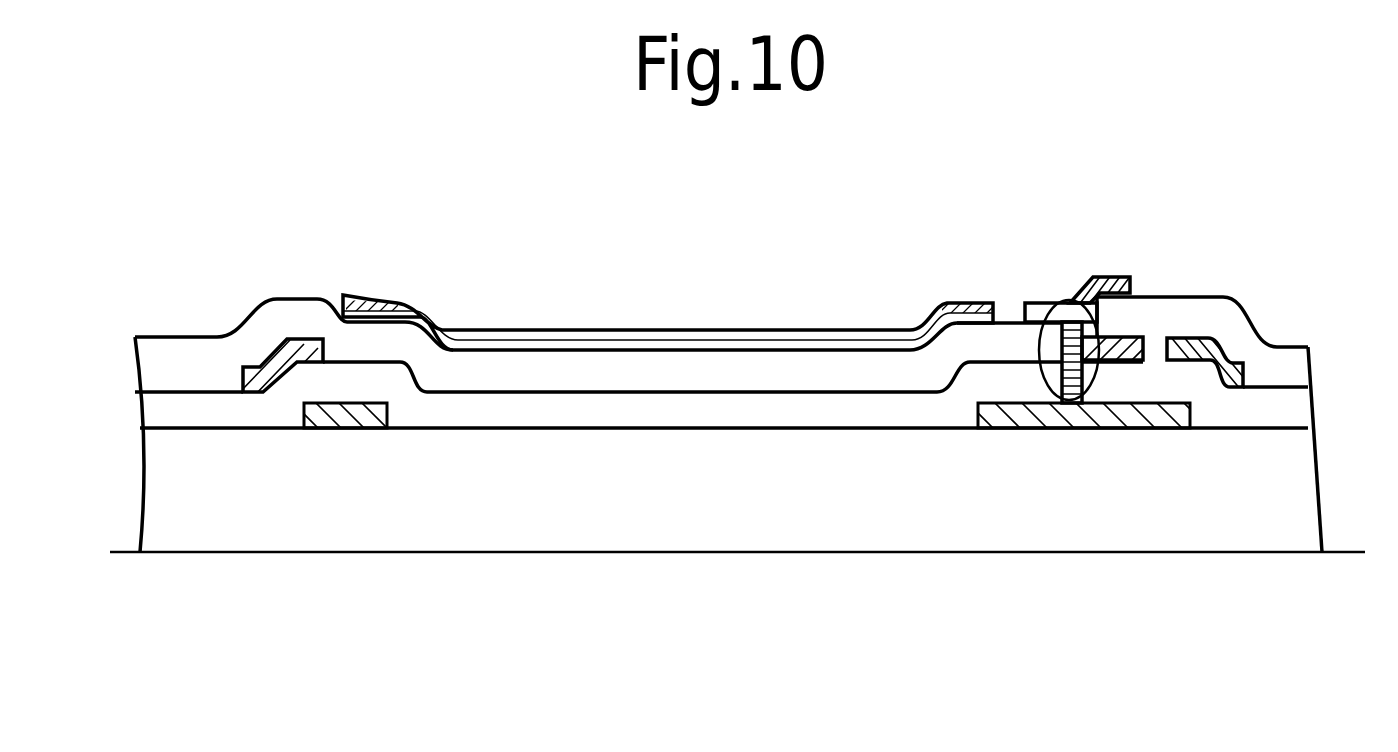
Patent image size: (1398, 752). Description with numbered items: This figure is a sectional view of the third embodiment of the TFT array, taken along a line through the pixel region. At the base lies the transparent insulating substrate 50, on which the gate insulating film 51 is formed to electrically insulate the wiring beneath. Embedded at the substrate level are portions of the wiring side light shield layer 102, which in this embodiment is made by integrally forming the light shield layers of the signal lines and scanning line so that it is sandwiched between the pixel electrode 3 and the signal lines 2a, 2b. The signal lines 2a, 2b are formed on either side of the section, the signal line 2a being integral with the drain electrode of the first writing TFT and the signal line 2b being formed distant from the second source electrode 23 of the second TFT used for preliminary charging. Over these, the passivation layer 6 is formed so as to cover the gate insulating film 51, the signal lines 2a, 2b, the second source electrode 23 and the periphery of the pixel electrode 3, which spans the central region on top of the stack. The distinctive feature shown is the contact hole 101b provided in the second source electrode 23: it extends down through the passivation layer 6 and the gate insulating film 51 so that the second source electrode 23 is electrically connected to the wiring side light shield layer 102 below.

The signal line 2a is at (297, 350).
The signal line 2b is at (1205, 338).
The pixel electrode 3 is at (663, 350).
The passivation layer 6 is at (238, 340).
The second source electrode 23 is at (1117, 332).
The transparent insulating substrate 50 is at (736, 533).
The gate insulating film 51 is at (185, 398).
The contact hole 101b is at (1055, 310).
The wiring side light shield layer 102 is at (368, 415).